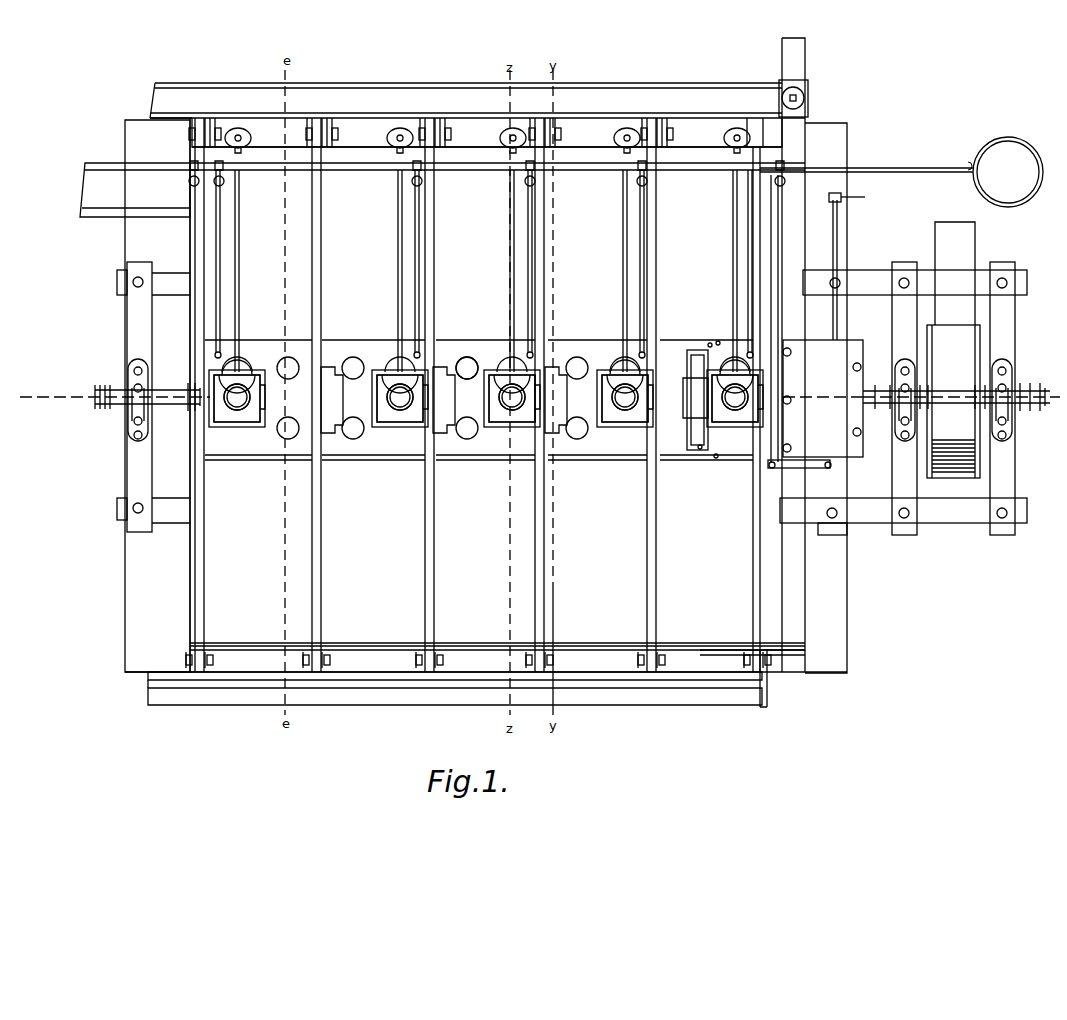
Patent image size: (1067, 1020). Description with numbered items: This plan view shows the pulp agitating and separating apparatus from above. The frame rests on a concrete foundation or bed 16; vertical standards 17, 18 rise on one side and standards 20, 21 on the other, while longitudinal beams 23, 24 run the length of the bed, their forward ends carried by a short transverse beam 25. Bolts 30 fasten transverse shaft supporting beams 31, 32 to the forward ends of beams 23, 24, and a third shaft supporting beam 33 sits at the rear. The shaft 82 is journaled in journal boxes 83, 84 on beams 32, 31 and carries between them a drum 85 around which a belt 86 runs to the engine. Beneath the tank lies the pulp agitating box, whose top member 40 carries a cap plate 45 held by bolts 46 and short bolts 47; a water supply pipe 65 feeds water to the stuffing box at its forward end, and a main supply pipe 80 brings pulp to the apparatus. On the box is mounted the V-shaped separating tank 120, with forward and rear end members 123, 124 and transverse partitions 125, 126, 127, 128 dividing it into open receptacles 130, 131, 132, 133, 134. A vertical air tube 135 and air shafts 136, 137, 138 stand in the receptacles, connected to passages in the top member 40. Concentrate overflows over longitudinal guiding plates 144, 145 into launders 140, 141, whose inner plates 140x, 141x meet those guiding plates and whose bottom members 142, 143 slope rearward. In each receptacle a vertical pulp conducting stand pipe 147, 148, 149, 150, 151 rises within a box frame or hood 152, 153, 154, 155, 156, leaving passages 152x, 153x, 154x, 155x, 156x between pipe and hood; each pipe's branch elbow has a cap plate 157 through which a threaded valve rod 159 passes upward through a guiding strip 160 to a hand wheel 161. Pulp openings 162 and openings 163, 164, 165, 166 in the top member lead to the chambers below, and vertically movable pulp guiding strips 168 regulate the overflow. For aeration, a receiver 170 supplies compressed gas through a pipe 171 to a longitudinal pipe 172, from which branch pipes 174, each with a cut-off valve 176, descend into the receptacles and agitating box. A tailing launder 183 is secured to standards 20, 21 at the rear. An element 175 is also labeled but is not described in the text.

The concrete foundation or bed 16 is at (123, 577).
The vertical standard 17 is at (322, 655).
The vertical standard 18 is at (190, 655).
The vertical standard 20 is at (440, 125).
The vertical standard 21 is at (428, 130).
The longitudinal beam 23 is at (957, 523).
The longitudinal beam 24 is at (880, 270).
The short transverse beam 25 is at (850, 535).
The bolt 30 is at (904, 278).
The transverse shaft supporting beam 31 is at (1015, 472).
The transverse shaft supporting beam 32 is at (892, 483).
The transverse shaft supporting beam 33 is at (140, 325).
The top member 40 is at (477, 361).
The cap plate 45 is at (823, 398).
The bolt 46 is at (860, 362).
The short bolt 47 is at (780, 350).
The water supply pipe 65 is at (838, 225).
The main supply pipe 80 is at (803, 62).
The shaft 82 is at (178, 410).
The journal box 83 is at (905, 360).
The shaft journal box 84 is at (132, 425).
The drum 85 is at (942, 478).
The belt 86 is at (948, 220).
The separating tank 120 is at (225, 595).
The forward end member 123 is at (758, 540).
The rear end member 124 is at (205, 560).
The transverse partition 125 is at (655, 558).
The transverse partition 126 is at (542, 560).
The transverse partition 127 is at (433, 562).
The transverse partition 128 is at (320, 570).
The separating receptacle 130 is at (706, 373).
The separating receptacle 131 is at (597, 368).
The separating receptacle 132 is at (485, 368).
The separating receptacle 133 is at (373, 370).
The separating receptacle 134 is at (258, 366).
The vertical air tube 135 is at (687, 372).
The vertical air shaft 136 is at (557, 375).
The vertical air shaft 137 is at (443, 365).
The vertical air shaft 138 is at (335, 365).
The concentrate discharging launder 140 is at (390, 690).
The inner side plate of launder 140x is at (148, 676).
The concentrate discharging launder 141 is at (232, 100).
The inner side plate of launder 141x is at (150, 118).
The launder bottom member 142 is at (150, 697).
The launder bottom member 143 is at (152, 100).
The overflow guiding plate 144 is at (765, 680).
The overflow guiding plate 145 is at (357, 130).
The pulp conducting stand pipe 147 is at (737, 412).
The pulp conducting stand pipe 148 is at (626, 412).
The pulp conducting stand pipe 149 is at (513, 412).
The pulp conducting stand pipe 150 is at (404, 412).
The pulp conducting stand pipe 151 is at (240, 412).
The box frame or hood 152 is at (733, 430).
The passage 152x is at (720, 432).
The box frame or hood 153 is at (622, 430).
The passage 153x is at (607, 432).
The box frame or hood 154 is at (510, 430).
The passage 154x is at (497, 432).
The box frame or hood 155 is at (405, 430).
The passage 155x is at (385, 432).
The box frame or hood 156 is at (252, 430).
The passage 156x is at (247, 435).
The cap plate 157 is at (245, 375).
The valve rod 159 is at (240, 292).
The guiding strip 160 is at (690, 155).
The hand wheel 161 is at (243, 128).
The pulp opening 162 is at (692, 389).
The opening 163 is at (580, 358).
The opening 164 is at (470, 358).
The opening 165 is at (355, 358).
The opening 166 is at (290, 357).
The pulp guiding strip 168 is at (705, 648).
The receiver 170 is at (1000, 150).
The gas conducting pipe 171 is at (842, 173).
The longitudinal pipe 172 is at (395, 171).
The branch pipe 174 is at (222, 262).
The shaft hole 175 is at (815, 422).
The cut-off valve 176 is at (224, 185).
The tailing launder 183 is at (125, 210).